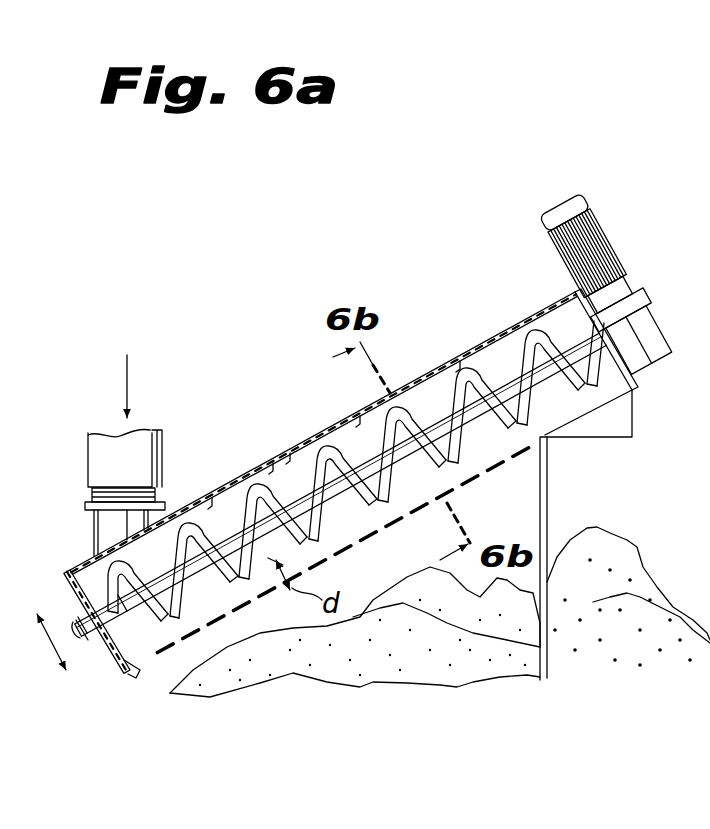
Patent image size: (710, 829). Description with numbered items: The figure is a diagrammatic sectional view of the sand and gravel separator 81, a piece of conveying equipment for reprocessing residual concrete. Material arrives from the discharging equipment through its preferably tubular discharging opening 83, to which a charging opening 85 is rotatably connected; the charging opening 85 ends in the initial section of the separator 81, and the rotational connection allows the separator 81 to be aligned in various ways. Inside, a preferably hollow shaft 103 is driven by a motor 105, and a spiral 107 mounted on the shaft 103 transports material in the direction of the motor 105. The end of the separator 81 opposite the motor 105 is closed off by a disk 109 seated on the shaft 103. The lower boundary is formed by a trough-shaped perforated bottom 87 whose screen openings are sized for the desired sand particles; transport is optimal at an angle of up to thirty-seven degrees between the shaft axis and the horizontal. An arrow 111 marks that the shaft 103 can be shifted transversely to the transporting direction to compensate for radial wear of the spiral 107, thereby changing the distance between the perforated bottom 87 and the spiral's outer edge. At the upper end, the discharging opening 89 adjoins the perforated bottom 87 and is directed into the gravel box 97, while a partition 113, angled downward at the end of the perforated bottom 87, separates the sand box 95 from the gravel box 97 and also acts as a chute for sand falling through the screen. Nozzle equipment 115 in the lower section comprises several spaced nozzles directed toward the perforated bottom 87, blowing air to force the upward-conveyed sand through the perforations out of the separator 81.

The sand and gravel separator 81 is at (393, 273).
The discharging opening 83 is at (88, 460).
The charging opening 85 is at (90, 530).
The perforated bottom 87 is at (506, 462).
The discharging opening 89 is at (612, 445).
The sand box 95 is at (386, 692).
The gravel box 97 is at (604, 692).
The hollow shaft 103 is at (95, 638).
The motor 105 is at (641, 300).
The spiral 107 is at (177, 645).
The disk 109 is at (135, 674).
The arrow 111 is at (50, 655).
The partition 113 is at (553, 498).
The nozzle equipment 115 is at (271, 462).